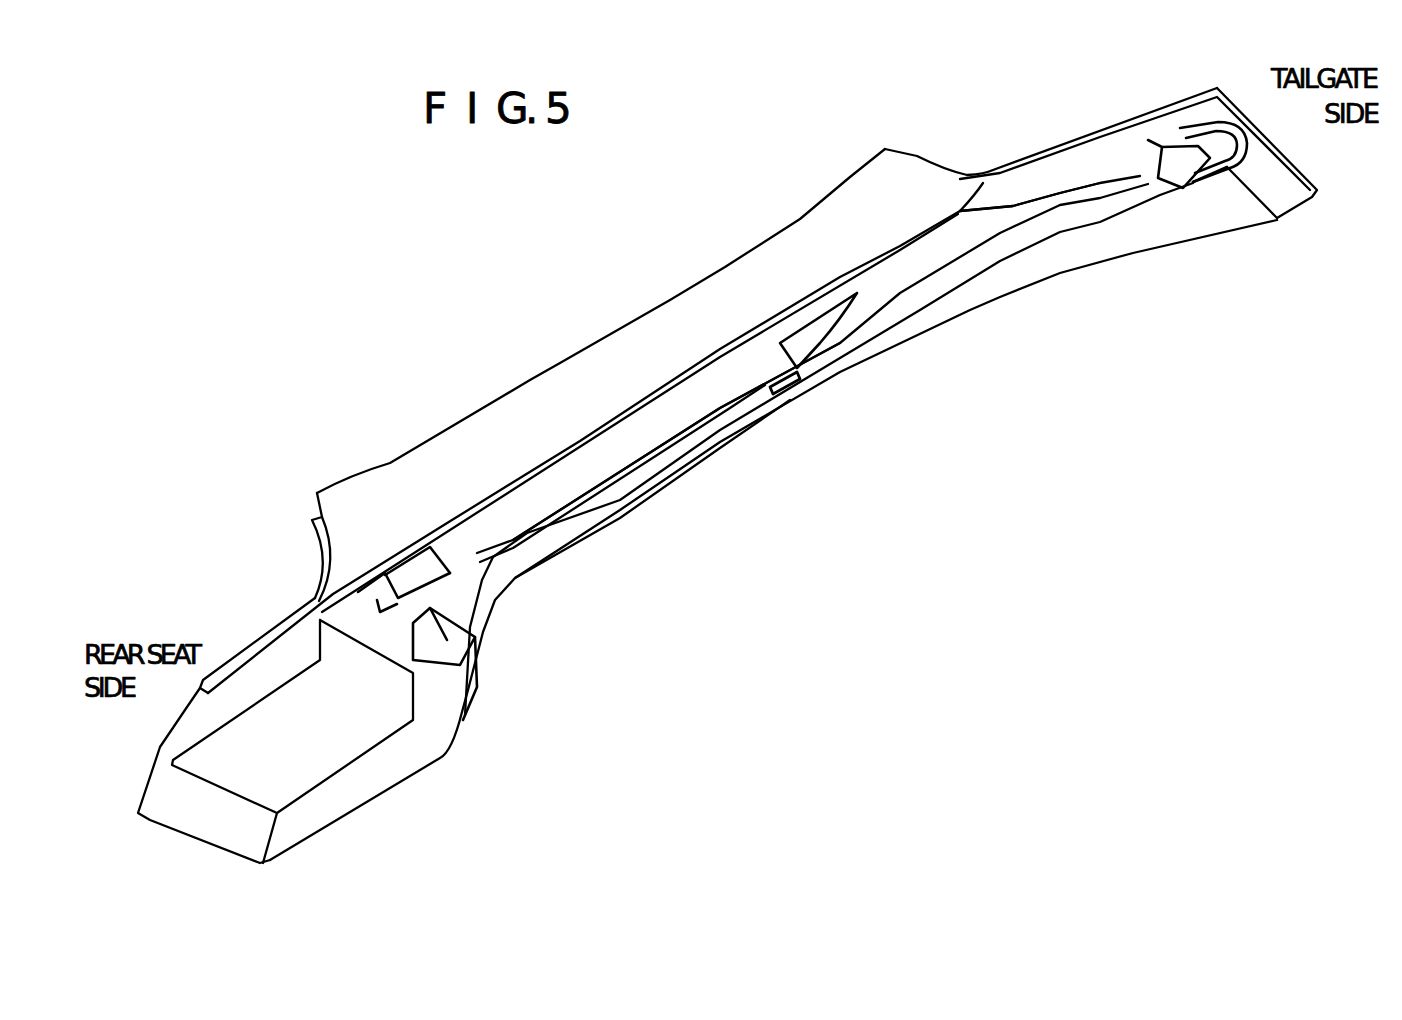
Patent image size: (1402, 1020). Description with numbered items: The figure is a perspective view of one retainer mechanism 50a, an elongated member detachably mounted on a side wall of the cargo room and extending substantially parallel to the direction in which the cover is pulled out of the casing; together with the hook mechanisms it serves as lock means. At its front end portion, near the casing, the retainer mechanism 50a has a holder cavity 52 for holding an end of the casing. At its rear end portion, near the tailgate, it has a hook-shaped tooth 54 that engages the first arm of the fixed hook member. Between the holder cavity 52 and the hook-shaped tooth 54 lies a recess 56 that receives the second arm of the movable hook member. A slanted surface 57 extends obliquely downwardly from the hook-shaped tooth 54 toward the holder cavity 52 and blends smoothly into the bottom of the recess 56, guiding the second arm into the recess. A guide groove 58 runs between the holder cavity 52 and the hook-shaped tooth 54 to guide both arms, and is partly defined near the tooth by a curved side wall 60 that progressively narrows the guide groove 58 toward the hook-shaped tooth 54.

The retainer mechanism 50a is at (966, 102).
The holder cavity 52 is at (430, 660).
The hook-shaped tooth 54 is at (1182, 153).
The recess 56 is at (787, 393).
The slanted surface 57 is at (825, 340).
The guide groove 58 is at (622, 457).
The curved side wall 60 is at (1010, 205).